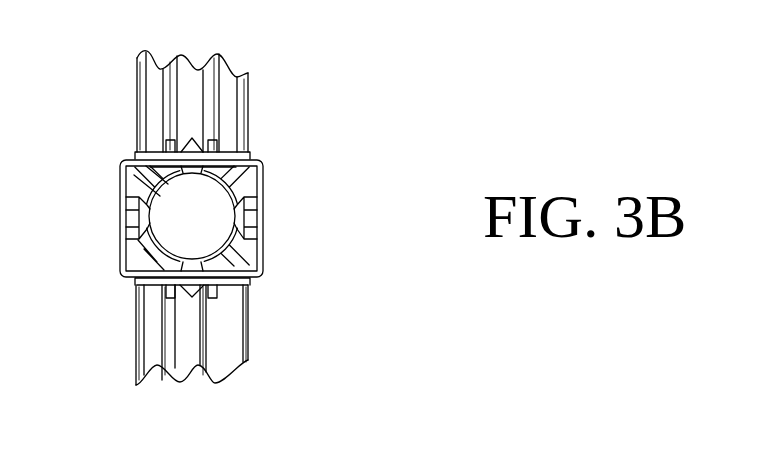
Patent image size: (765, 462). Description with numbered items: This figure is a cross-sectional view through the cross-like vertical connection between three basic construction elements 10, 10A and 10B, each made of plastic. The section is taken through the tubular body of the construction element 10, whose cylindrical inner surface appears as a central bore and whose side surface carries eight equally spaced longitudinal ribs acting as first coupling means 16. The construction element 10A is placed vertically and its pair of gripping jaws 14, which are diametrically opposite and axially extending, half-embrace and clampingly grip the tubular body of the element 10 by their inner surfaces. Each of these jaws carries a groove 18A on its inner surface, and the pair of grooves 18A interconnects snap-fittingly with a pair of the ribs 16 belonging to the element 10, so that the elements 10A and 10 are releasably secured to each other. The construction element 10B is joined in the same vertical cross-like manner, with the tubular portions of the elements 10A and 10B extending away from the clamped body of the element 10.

The basic construction element 10 is at (135, 198).
The basic construction element 10A is at (250, 334).
The basic construction element 10B is at (250, 105).
The gripping jaws 14 is at (140, 180).
The first coupling means 16 is at (135, 238).
The grooves 18A is at (247, 242).